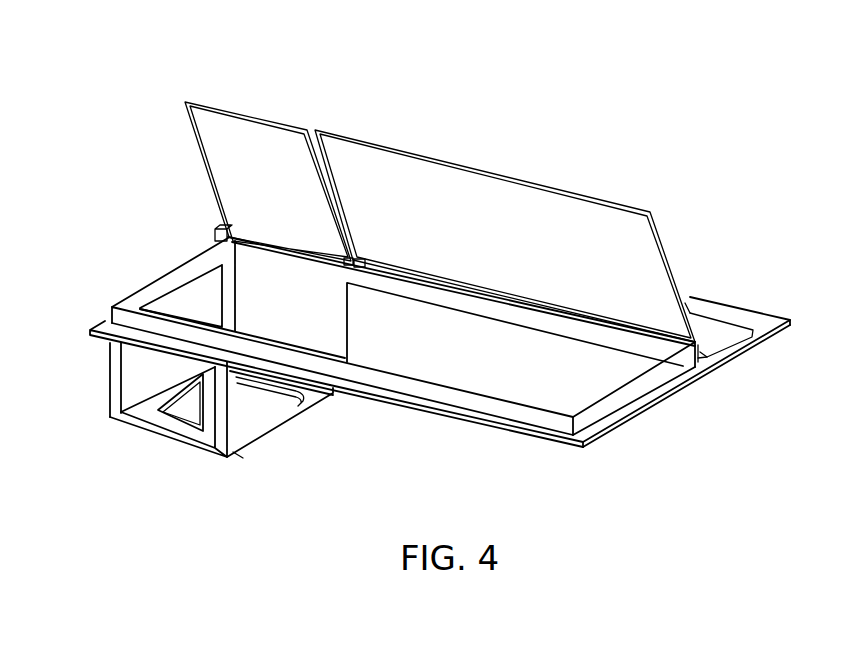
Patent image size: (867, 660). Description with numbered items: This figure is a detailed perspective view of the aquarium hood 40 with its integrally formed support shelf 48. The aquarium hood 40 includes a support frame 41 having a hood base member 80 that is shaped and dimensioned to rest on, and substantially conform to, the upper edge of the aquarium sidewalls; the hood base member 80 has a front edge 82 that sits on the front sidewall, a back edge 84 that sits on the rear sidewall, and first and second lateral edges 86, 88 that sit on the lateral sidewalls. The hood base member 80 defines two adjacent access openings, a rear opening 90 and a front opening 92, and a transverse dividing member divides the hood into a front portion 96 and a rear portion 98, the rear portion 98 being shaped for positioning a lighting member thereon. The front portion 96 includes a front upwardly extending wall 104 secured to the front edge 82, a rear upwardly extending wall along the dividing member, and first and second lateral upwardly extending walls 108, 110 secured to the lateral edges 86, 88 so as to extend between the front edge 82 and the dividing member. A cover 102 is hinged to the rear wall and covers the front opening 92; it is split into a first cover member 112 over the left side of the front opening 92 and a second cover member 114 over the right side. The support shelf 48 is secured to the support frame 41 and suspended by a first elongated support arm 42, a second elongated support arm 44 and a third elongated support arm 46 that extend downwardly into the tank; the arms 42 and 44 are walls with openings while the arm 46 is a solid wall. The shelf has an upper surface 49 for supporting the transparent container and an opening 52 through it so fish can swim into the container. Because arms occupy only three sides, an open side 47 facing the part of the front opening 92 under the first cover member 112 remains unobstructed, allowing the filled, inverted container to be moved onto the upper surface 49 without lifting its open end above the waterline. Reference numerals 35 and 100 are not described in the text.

The slot 35 is at (712, 332).
The aquarium hood 40 is at (362, 393).
The support frame 41 is at (578, 449).
The first elongated support arm 42 is at (115, 415).
The second elongated support arm 44 is at (157, 302).
The third elongated support arm 46 is at (250, 282).
The open side 47 is at (238, 456).
The support shelf 48 is at (160, 450).
The upper surface 49 is at (298, 406).
The opening 52 is at (248, 417).
The hood base member 80 is at (695, 372).
The front edge 82 is at (397, 407).
The back edge 84 is at (690, 298).
The first lateral edge 86 is at (667, 405).
The second lateral edge 88 is at (97, 323).
The rear opening 90 is at (710, 342).
The front opening 92 is at (522, 370).
The front portion 96 is at (108, 338).
The rear portion 98 is at (733, 303).
The plate corner 100 is at (740, 340).
The cover 102 is at (370, 121).
The front upwardly extending wall 104 is at (288, 362).
The first lateral upwardly extending wall 108 is at (182, 262).
The second lateral upwardly extending wall 110 is at (623, 398).
The first cover member 112 is at (447, 203).
The second cover member 114 is at (247, 113).